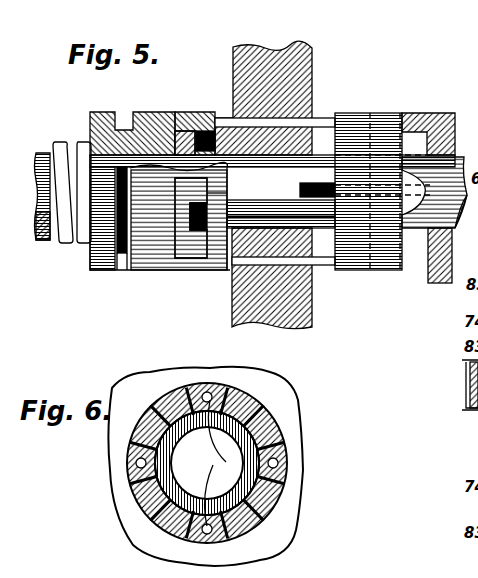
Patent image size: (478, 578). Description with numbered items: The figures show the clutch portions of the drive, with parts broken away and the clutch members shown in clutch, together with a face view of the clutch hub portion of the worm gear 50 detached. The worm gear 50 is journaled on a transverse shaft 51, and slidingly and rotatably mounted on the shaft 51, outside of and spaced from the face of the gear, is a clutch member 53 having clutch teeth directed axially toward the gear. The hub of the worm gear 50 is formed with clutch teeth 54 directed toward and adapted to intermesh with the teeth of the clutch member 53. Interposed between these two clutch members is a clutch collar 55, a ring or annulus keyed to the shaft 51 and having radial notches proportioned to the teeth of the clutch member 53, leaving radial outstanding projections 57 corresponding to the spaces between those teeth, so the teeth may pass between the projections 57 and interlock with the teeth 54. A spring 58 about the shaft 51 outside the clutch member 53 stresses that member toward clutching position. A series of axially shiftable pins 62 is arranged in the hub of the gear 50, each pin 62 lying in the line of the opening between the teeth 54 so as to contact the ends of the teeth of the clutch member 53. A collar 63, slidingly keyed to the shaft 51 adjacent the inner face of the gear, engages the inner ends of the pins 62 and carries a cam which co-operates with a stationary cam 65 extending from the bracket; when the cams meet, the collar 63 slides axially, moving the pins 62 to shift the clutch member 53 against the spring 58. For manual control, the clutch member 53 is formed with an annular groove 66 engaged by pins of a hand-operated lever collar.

In FIG. 5, the worm gear 50 is at (300, 64).
In FIG. 6, the worm gear 50 is at (205, 466).
In FIG. 5, the transverse shaft 51 is at (450, 163).
In FIG. 5, the clutch member 53 is at (155, 270).
In FIG. 5, the clutch teeth 54 is at (212, 230).
In FIG. 6, the clutch teeth 54 is at (288, 393).
In FIG. 5, the clutch collar 55 is at (182, 134).
In FIG. 5, the radial outstanding projections 57 is at (188, 236).
In FIG. 5, the spring 58 is at (59, 142).
In FIG. 5, the axially shiftable pins 62 is at (310, 122).
In FIG. 6, the axially shiftable pins 62 is at (265, 462).
In FIG. 5, the collar 63 is at (375, 272).
In FIG. 5, the stationary cam 65 is at (413, 120).
In FIG. 5, the annular groove 66 is at (122, 256).